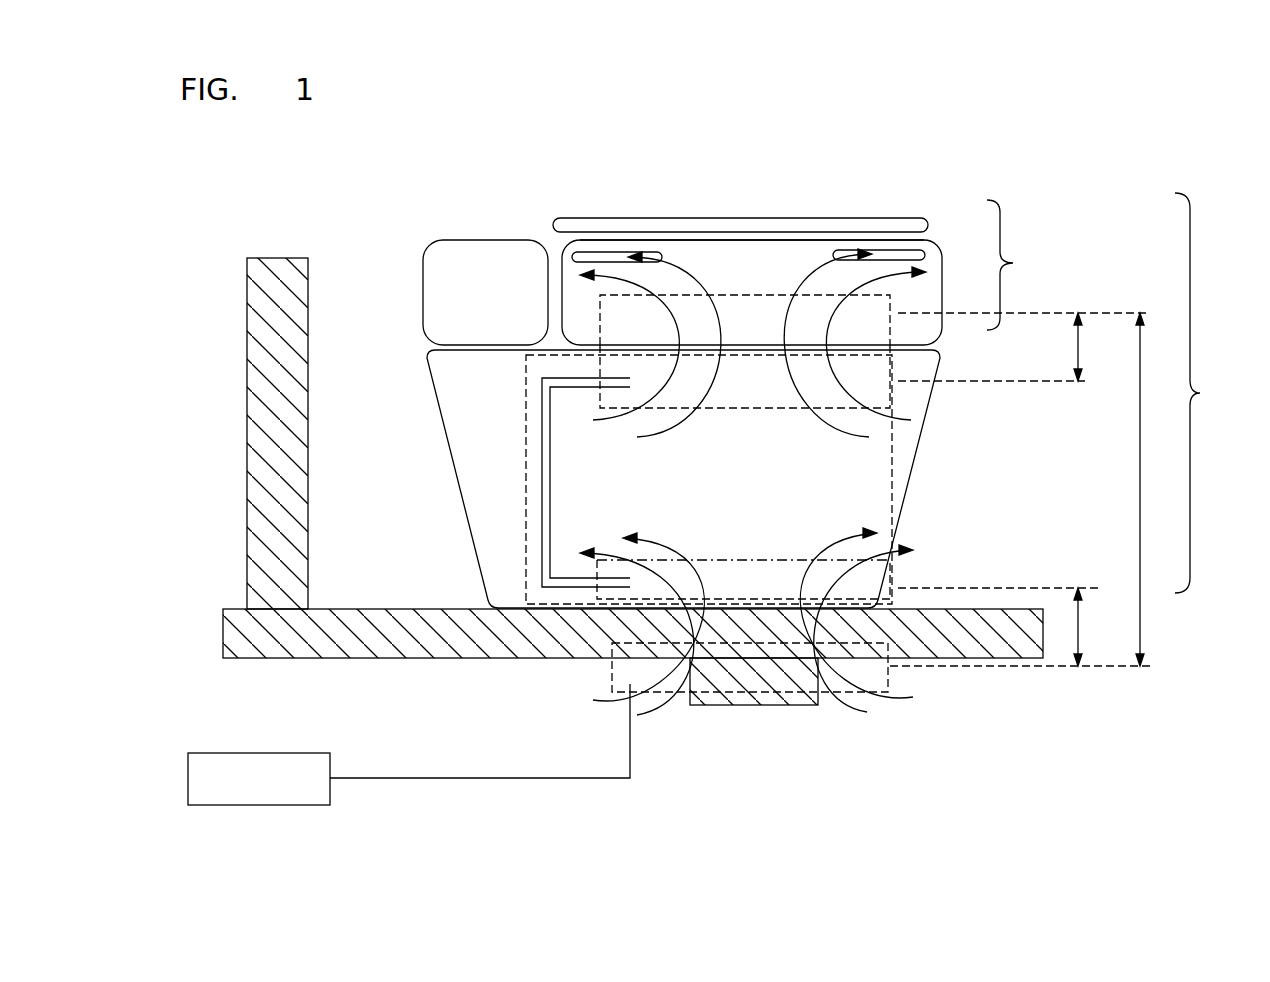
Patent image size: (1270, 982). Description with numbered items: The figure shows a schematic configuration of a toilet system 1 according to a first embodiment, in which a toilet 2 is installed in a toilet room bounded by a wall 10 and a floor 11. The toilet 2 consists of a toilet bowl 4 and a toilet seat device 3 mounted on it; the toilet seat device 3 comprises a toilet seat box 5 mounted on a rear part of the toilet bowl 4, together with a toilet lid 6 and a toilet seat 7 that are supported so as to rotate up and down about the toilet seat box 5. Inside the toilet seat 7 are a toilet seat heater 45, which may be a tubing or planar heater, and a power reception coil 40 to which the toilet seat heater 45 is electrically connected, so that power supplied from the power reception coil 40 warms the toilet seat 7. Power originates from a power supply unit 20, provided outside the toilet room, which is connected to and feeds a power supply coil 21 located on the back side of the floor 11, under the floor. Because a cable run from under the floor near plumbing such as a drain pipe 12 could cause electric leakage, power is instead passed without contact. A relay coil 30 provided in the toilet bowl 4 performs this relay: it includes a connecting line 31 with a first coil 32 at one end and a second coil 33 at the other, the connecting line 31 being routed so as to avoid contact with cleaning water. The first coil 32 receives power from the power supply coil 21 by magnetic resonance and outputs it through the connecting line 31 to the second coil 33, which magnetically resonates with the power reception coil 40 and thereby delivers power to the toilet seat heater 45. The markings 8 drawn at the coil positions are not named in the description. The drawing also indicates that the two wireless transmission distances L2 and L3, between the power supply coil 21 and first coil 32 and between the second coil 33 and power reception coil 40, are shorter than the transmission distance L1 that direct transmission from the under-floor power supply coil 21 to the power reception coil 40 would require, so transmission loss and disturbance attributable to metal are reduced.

The toilet system 1 is at (1145, 116).
The toilet 2 is at (1201, 393).
The toilet seat device 3 is at (801, 272).
The toilet bowl 4 is at (920, 440).
The toilet seat box 5 is at (487, 240).
The toilet lid 6 is at (905, 218).
The toilet seat 7 is at (760, 238).
The gas flow 8 is at (753, 482).
The wall 10 is at (270, 257).
The floor 11 is at (400, 658).
The drain pipe 12 is at (738, 705).
The power supply unit 20 is at (255, 753).
The power supply coil 21 is at (612, 672).
The relay coil 30 is at (893, 473).
The connecting line 31 is at (552, 470).
The first coil 32 is at (753, 560).
The second coil 33 is at (742, 408).
The power reception coil 40 is at (888, 305).
The toilet seat heater 45 is at (605, 252).
The transmission distance L1 is at (1155, 489).
The transmission distance L2 is at (1020, 627).
The transmission distance L3 is at (1023, 347).